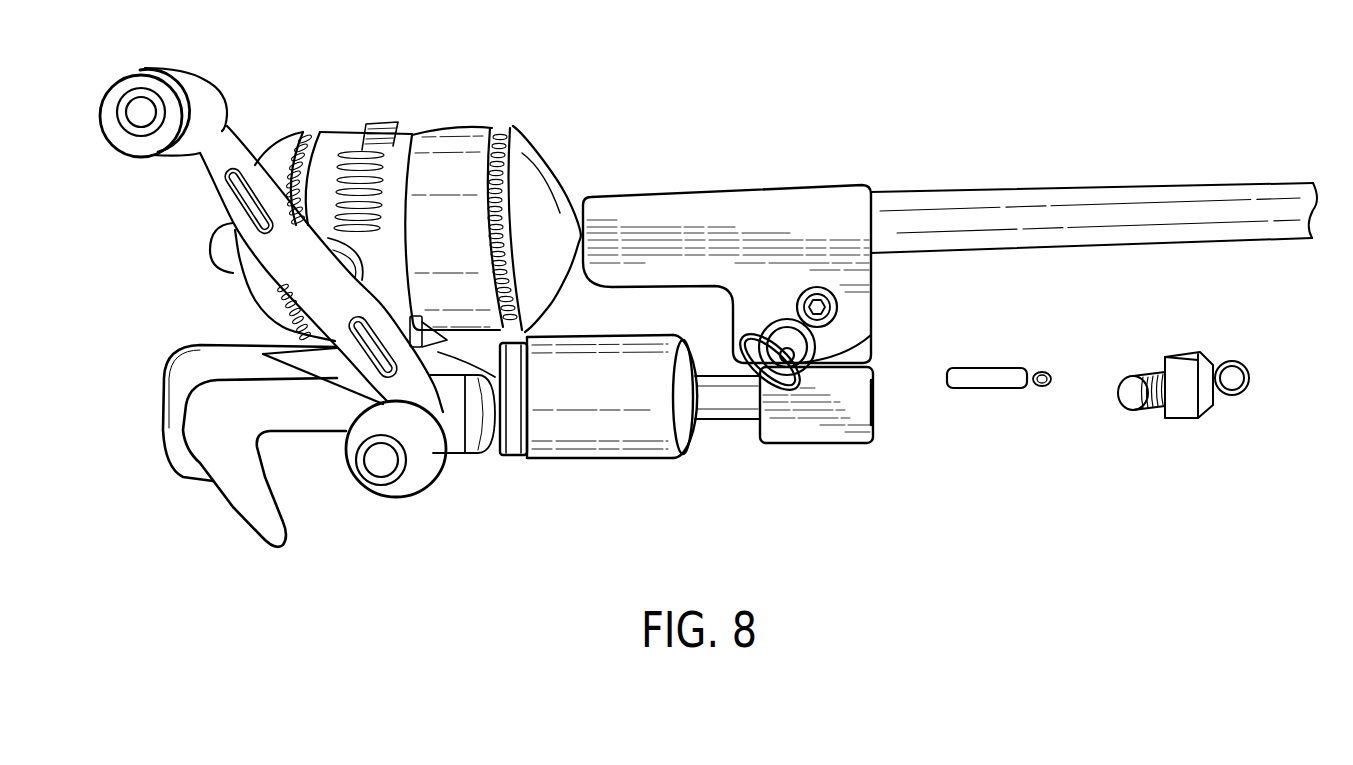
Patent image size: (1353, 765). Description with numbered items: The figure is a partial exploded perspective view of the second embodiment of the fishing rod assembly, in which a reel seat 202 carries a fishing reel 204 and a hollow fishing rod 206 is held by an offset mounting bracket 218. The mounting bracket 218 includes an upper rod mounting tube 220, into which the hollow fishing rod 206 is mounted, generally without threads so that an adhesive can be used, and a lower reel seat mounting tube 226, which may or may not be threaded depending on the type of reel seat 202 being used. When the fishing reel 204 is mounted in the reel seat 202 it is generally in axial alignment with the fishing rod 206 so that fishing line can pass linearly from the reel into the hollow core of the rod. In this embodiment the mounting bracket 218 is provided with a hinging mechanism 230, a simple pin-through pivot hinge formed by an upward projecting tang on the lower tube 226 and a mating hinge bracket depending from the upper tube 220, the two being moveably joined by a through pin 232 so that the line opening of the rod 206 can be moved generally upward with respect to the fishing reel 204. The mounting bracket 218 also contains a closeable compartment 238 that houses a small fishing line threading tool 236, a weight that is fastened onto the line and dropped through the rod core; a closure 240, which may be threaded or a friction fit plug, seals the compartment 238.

The reel seat 202 is at (333, 446).
The fishing reel 204 is at (467, 145).
The hollow fishing rod 206 is at (1042, 187).
The mounting bracket 218 is at (718, 456).
The upper rod mounting tube 220 is at (720, 205).
The lower reel seat mounting tube 226 is at (790, 433).
The hinging mechanism 230 is at (876, 350).
The through pin 232 is at (840, 302).
The fishing line threading tool 236 is at (995, 390).
The closeable compartment 238 is at (877, 402).
The closure 240 is at (1183, 415).